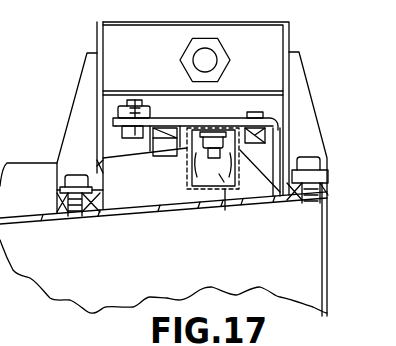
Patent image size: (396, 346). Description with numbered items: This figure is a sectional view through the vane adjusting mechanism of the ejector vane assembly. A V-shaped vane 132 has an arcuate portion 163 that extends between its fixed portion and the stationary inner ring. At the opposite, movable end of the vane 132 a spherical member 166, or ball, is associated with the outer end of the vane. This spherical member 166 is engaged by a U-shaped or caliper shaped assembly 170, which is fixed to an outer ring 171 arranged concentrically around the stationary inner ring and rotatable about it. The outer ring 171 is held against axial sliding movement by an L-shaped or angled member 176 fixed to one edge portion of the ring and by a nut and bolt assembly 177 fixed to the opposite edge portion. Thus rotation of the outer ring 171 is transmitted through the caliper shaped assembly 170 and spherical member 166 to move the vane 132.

The vane 132 is at (141, 285).
The arcuate portion 163 is at (270, 128).
The spherical member 166 is at (227, 205).
The caliper shaped assembly 170 is at (232, 148).
The outer ring 171 is at (235, 116).
The angled member 176 is at (262, 112).
The nut and bolt assembly 177 is at (135, 102).